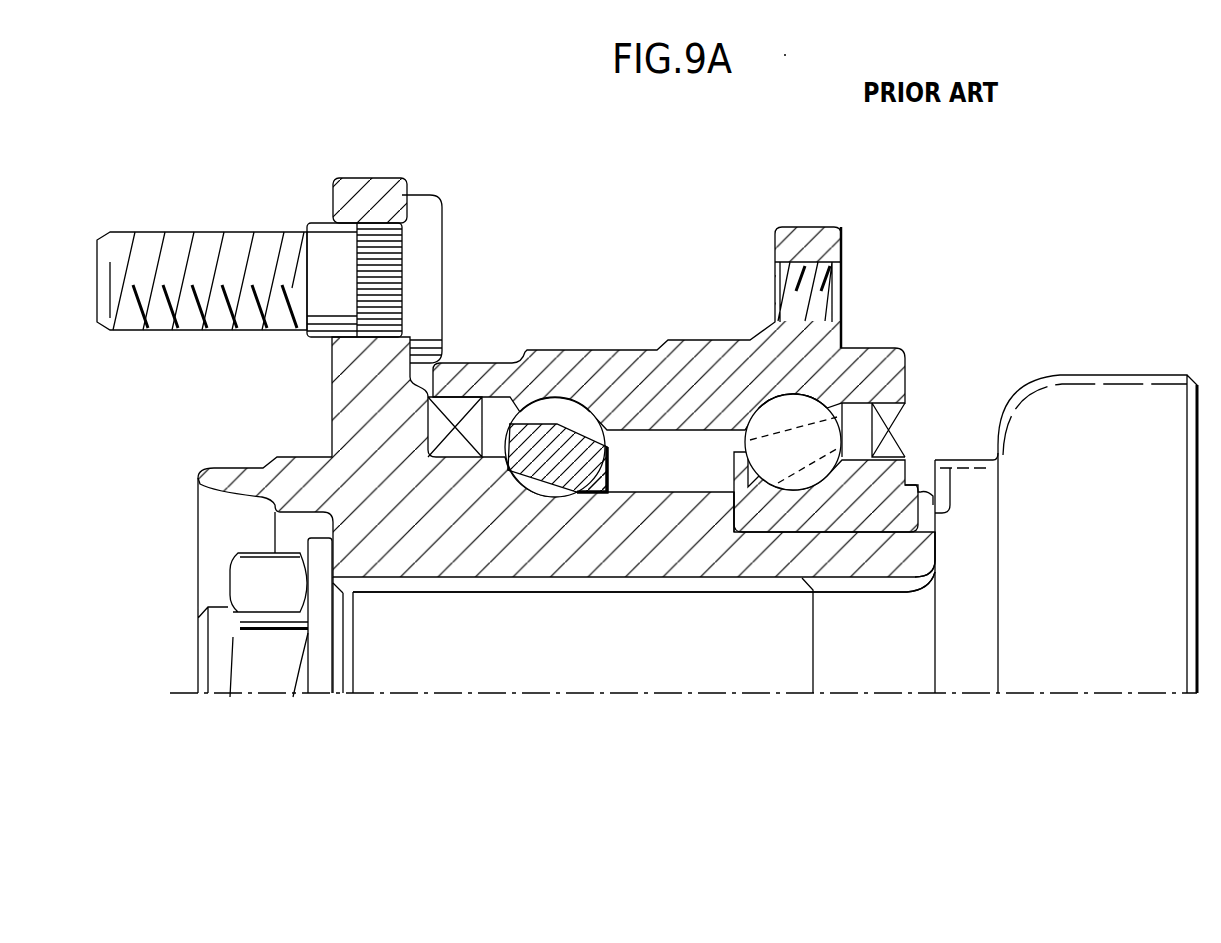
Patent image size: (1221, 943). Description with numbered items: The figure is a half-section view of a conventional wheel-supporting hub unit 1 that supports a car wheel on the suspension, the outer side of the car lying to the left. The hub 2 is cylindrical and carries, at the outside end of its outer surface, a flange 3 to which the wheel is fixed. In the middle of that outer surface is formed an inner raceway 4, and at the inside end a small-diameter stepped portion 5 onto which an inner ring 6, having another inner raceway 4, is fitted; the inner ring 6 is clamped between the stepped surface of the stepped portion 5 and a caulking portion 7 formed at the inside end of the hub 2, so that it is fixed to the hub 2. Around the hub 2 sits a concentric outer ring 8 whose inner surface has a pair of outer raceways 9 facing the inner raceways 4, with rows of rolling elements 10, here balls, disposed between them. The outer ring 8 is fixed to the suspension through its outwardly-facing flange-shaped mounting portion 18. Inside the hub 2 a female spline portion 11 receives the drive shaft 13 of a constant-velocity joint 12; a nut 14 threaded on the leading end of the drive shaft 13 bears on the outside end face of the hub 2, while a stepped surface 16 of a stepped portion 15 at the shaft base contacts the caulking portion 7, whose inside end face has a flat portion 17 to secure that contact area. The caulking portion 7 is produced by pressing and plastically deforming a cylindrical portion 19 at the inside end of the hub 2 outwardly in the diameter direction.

The wheel-supporting hub unit 1 is at (665, 207).
The hub 2 is at (362, 395).
The flange 3 is at (375, 186).
The inner raceway 4 is at (523, 472).
The small-diameter stepped portion 5 is at (757, 533).
The inner ring 6 is at (853, 465).
The caulking portion 7 is at (925, 492).
The outer ring 8 is at (606, 362).
The outer raceway 9 is at (562, 414).
The rolling element 10 is at (535, 408).
The female spline portion 11 is at (503, 585).
The constant-velocity joint 12 is at (1079, 404).
The drive shaft 13 is at (548, 670).
The nut 14 is at (243, 578).
The stepped portion 15 is at (970, 675).
The stepped surface 16 is at (933, 645).
The flat portion 17 is at (950, 508).
The outwardly-facing flange-shaped mounting portion 18 is at (808, 228).
The cylindrical portion 19 is at (843, 567).